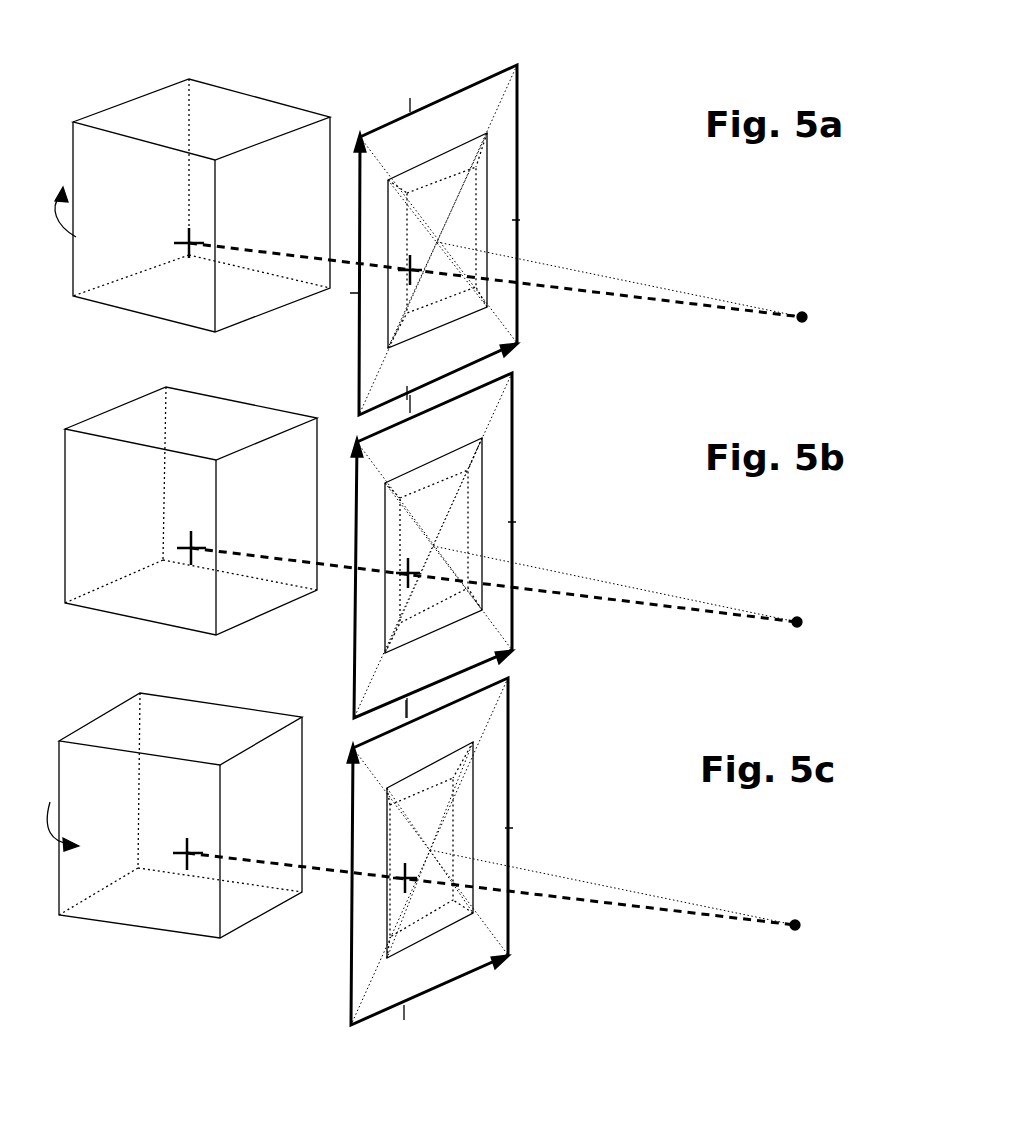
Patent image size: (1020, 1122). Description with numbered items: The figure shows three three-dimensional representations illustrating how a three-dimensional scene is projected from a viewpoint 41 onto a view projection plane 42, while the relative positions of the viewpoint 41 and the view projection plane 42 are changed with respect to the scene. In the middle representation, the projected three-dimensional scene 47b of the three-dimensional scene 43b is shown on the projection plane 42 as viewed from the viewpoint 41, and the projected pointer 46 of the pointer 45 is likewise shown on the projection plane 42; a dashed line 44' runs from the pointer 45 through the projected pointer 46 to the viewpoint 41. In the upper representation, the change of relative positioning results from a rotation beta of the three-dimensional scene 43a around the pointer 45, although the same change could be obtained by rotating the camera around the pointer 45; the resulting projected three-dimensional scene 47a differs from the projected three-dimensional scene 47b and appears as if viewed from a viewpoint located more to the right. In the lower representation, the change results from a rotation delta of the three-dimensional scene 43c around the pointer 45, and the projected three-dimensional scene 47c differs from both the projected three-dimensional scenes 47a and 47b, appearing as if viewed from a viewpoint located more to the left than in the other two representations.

In FIG. 5A, the viewpoint 41 is at (802, 314).
In FIG. 5B, the viewpoint 41 is at (797, 618).
In FIG. 5C, the viewpoint 41 is at (795, 922).
In FIG. 5A, the view projection plane 42 is at (517, 90).
In FIG. 5B, the view projection plane 42 is at (512, 407).
In FIG. 5C, the view projection plane 42 is at (508, 715).
In FIG. 5A, the three-dimensional scene 43a is at (143, 93).
In FIG. 5B, the three-dimensional scene 43b is at (123, 402).
In FIG. 5C, the three-dimensional scene 43c is at (97, 715).
In FIG. 5A, the line of sight from pointer to viewpoint 44' is at (495, 318).
In FIG. 5B, the line of sight from pointer to viewpoint 44' is at (494, 621).
In FIG. 5C, the line of sight from pointer to viewpoint 44' is at (491, 926).
In FIG. 5A, the pointer 45 is at (189, 250).
In FIG. 5B, the pointer 45 is at (185, 545).
In FIG. 5C, the pointer 45 is at (173, 853).
In FIG. 5A, the projected pointer 46 is at (414, 276).
In FIG. 5B, the projected pointer 46 is at (412, 585).
In FIG. 5C, the projected pointer 46 is at (408, 888).
In FIG. 5A, the projected three-dimensional scene 47a is at (450, 143).
In FIG. 5B, the projected three-dimensional scene 47b is at (385, 600).
In FIG. 5C, the projected three-dimensional scene 47c is at (385, 927).